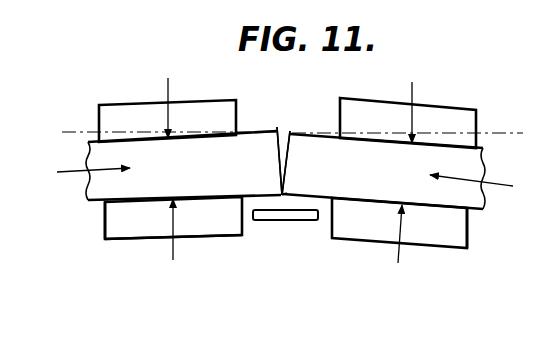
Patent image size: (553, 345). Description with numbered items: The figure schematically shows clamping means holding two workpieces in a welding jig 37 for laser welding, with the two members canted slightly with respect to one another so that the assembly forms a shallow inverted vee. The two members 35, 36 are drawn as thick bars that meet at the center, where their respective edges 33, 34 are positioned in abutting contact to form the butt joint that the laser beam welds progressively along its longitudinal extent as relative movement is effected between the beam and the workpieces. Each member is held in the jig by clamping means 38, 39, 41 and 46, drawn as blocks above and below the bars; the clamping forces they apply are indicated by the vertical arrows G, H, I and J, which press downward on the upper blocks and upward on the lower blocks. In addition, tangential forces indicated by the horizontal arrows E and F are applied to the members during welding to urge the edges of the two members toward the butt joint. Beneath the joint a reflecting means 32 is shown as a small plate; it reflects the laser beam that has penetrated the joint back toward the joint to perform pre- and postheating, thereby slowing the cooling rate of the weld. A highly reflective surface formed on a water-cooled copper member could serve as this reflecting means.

The reflecting means 32 is at (282, 220).
The edge 33 is at (276, 150).
The edge 34 is at (289, 153).
The member 35 is at (212, 183).
The member 36 is at (373, 190).
The welding jig 37 is at (117, 245).
The clamping means 38 is at (108, 222).
The clamping means 39 is at (100, 118).
The clamping means 41 is at (458, 242).
The right upper block 46 is at (455, 113).
The clamping force arrow G is at (181, 104).
The clamping force arrow H is at (163, 236).
The clamping force arrow I is at (419, 109).
The clamping force arrow J is at (405, 242).
The tangential force arrow E is at (87, 156).
The tangential force arrow F is at (473, 170).